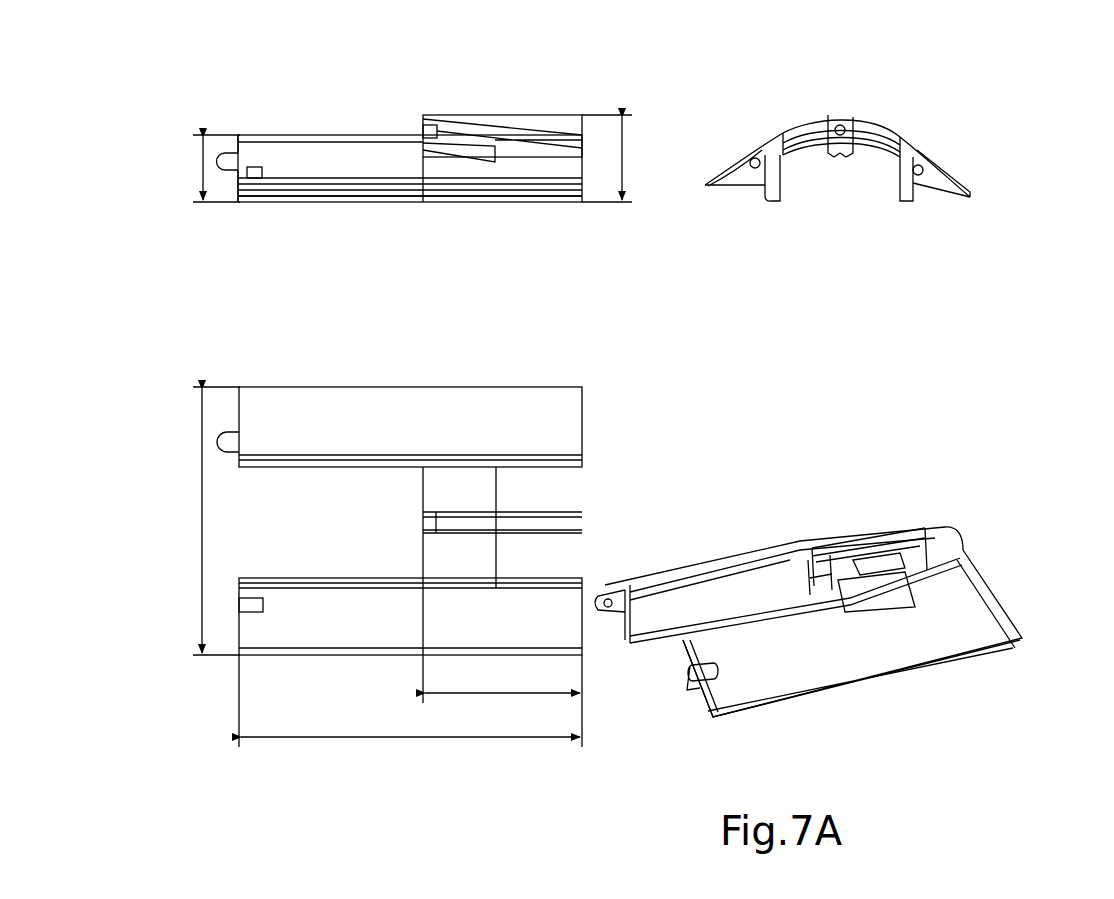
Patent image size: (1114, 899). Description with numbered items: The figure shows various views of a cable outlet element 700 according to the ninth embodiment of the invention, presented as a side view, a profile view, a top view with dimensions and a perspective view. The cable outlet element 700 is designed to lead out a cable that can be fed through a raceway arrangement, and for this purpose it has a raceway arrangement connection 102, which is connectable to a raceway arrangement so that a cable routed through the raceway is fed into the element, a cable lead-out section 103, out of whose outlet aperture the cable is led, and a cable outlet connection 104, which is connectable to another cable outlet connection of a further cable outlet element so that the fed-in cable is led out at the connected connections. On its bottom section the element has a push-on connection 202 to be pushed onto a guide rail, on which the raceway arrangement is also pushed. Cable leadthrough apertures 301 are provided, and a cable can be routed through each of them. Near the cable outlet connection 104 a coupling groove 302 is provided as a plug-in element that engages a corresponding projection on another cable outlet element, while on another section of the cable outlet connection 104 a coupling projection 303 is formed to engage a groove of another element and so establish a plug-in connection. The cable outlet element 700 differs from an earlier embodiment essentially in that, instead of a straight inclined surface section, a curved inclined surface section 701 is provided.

The cable outlet element 700 is at (1045, 82).
The curved inclined surface section 701 is at (528, 116).
The raceway arrangement connection 102 is at (583, 173).
The cable lead-out section 103 is at (250, 540).
The cable outlet connection 104 is at (228, 153).
The push-on connection 202 is at (297, 205).
The cable leadthrough aperture 301 is at (807, 157).
The coupling groove 302 is at (251, 170).
The coupling projection 303 is at (233, 160).